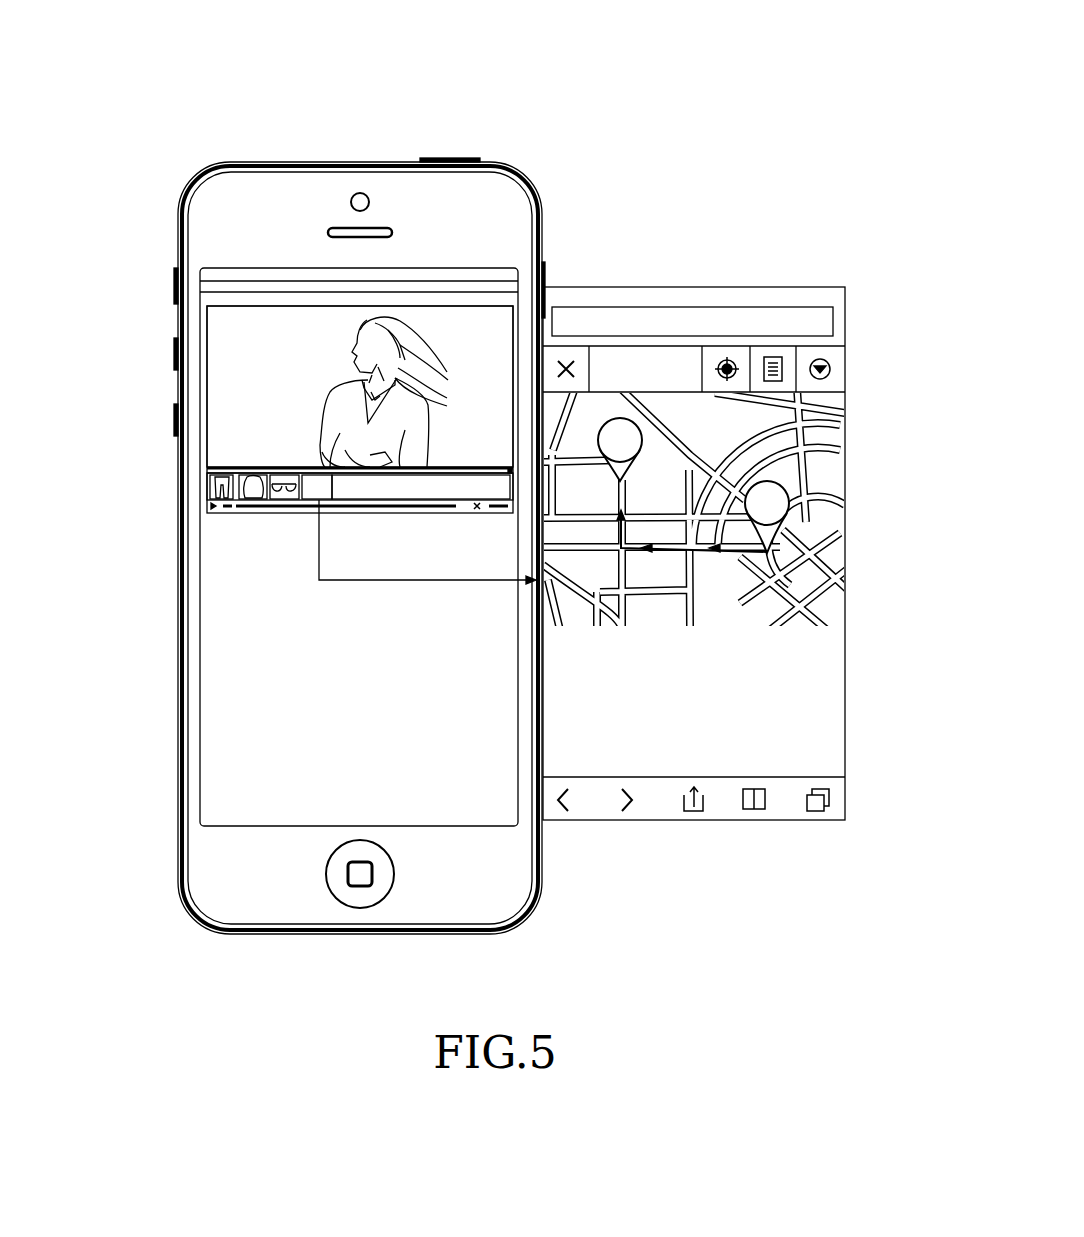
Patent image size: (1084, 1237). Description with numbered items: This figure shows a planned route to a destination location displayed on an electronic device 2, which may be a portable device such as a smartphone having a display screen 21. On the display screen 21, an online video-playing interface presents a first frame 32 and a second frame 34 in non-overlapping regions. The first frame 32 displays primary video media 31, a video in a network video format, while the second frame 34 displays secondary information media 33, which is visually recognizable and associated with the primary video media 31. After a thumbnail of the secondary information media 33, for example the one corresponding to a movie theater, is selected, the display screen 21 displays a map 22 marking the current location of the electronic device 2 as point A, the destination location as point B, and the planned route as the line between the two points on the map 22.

The electronic device 2 is at (303, 82).
The display screen 21 is at (248, 568).
The map 22 is at (828, 523).
The primary video media 31 is at (238, 357).
The first frame 32 is at (205, 393).
The secondary information media 33 is at (213, 483).
The second frame 34 is at (205, 493).